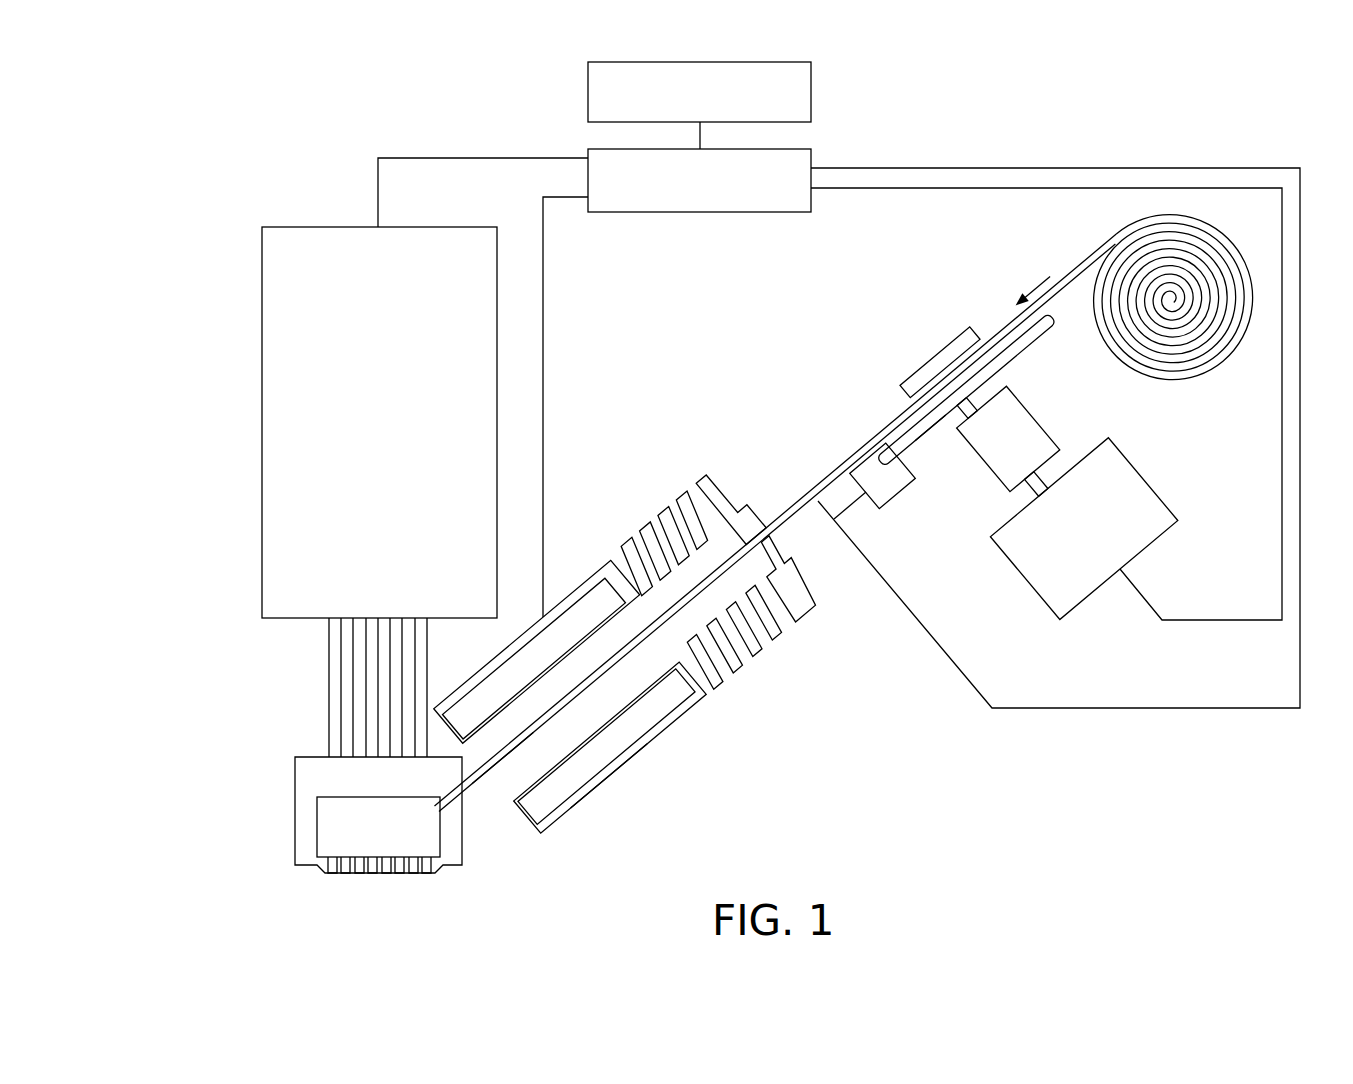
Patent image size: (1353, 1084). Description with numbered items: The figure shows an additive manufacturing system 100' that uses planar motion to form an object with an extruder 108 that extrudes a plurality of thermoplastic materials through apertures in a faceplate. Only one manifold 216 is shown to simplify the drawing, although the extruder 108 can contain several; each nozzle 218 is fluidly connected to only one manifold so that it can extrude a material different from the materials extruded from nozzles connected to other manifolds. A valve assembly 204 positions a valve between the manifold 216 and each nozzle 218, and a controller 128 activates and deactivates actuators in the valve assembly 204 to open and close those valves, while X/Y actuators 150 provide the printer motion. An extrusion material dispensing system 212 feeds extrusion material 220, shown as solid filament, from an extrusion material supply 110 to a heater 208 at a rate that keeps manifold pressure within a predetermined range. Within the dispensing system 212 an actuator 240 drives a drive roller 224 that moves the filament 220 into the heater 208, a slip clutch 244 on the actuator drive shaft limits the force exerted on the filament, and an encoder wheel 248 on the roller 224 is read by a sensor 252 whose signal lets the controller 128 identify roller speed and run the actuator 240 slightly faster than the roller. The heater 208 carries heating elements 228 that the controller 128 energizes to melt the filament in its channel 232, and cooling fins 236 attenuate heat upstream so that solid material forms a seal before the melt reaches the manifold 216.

The additive manufacturing system 100' is at (150, 135).
The extruder 108 is at (294, 747).
The extrusion material supply 110 is at (1243, 262).
The controller 128 is at (700, 213).
The X/Y actuators 150 is at (812, 92).
The valve assembly 204 is at (327, 225).
The heater 208 is at (618, 775).
The extrusion material dispensing system 212 is at (996, 620).
The manifold 216 is at (441, 838).
The nozzle 218 is at (338, 881).
The extrusion material 220 is at (1068, 273).
The drive roller 224 is at (942, 362).
The heating elements 228 is at (579, 603).
The tape path 232 is at (522, 750).
The cooling fins 236 is at (700, 482).
The actuator 240 is at (1153, 492).
The slip clutch 244 is at (1062, 432).
The encoder wheel 248 is at (922, 428).
The sensor 252 is at (886, 504).